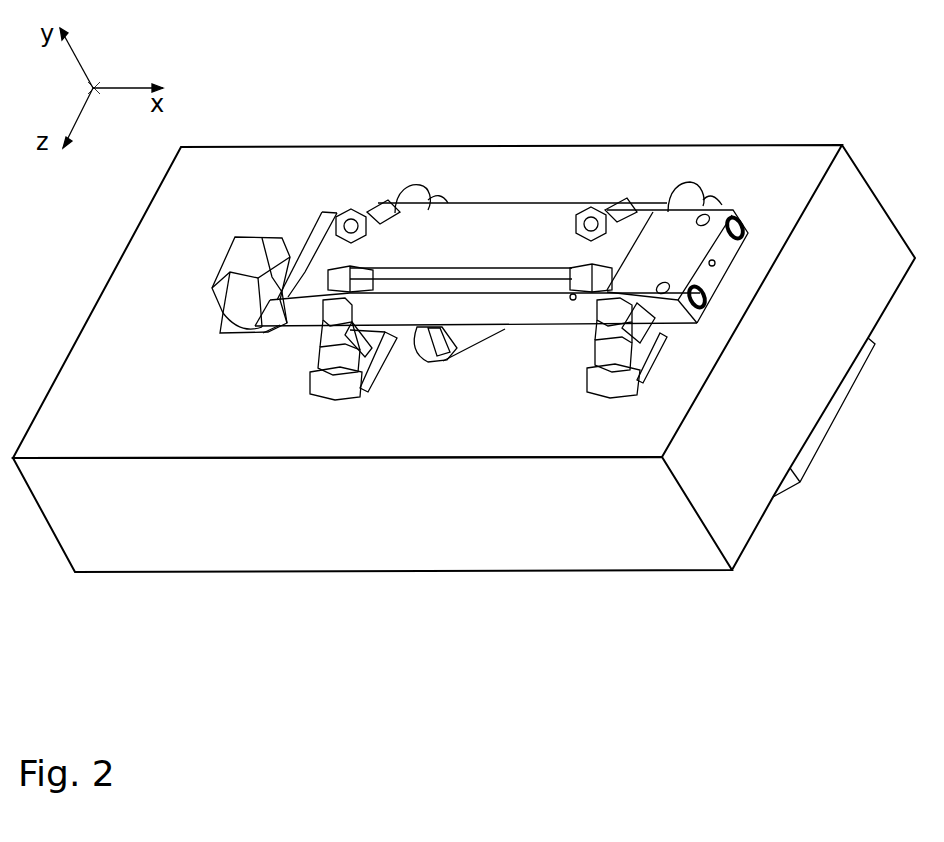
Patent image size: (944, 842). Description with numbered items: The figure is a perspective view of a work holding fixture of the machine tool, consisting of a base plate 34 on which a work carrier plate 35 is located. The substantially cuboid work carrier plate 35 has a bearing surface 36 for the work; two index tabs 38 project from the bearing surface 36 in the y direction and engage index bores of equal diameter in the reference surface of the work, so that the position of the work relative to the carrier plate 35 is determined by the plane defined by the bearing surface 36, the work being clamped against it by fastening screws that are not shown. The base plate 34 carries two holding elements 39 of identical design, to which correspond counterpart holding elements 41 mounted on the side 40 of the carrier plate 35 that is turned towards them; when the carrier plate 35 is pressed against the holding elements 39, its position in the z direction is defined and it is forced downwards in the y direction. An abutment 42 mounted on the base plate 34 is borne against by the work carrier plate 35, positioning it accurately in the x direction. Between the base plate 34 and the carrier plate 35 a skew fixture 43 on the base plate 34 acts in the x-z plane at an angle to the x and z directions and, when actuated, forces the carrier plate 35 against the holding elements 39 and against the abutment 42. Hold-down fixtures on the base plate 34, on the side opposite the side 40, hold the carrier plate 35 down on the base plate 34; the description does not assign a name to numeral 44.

The base plate 34 is at (203, 574).
The work carrier plate 35 is at (517, 204).
The bearing surface 36 is at (480, 213).
The index tabs 38 is at (343, 212).
The holding elements 39 is at (373, 372).
The side 40 is at (518, 314).
The counterpart holding elements 41 is at (323, 332).
The abutment 42 is at (268, 250).
The skew fixture 43 is at (457, 343).
The bearing 44 is at (420, 185).